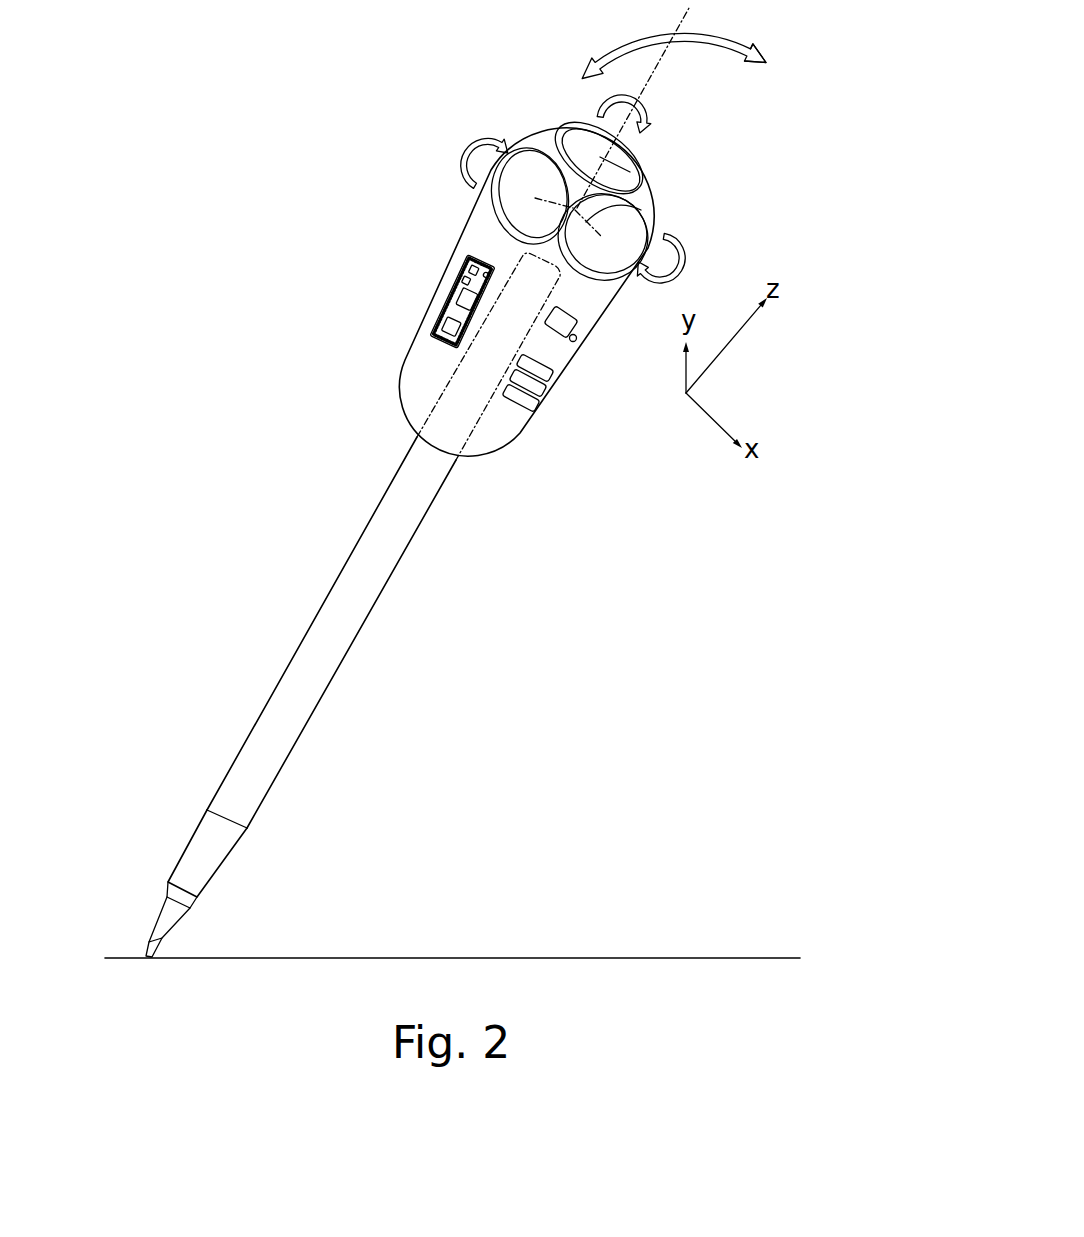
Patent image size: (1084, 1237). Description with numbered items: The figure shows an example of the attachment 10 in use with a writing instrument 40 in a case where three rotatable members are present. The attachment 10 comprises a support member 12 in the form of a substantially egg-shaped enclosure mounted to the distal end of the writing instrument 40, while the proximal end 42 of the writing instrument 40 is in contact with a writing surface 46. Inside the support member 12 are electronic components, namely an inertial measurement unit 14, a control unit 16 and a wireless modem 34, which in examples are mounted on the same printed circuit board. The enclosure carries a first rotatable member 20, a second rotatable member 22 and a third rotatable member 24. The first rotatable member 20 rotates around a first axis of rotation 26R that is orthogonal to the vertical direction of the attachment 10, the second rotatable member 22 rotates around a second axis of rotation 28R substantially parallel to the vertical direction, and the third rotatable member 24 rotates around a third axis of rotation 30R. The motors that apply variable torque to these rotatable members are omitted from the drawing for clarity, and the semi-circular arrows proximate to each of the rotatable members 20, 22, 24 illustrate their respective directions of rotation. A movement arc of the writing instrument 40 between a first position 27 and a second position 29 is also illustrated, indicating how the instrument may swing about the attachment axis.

The attachment 10 is at (405, 143).
The support member 12 is at (462, 250).
The inertial measurement unit 14 is at (578, 341).
The control unit 16 is at (435, 346).
The first rotatable member 20 is at (635, 233).
The second rotatable member 22 is at (640, 153).
The third rotatable member 24 is at (517, 199).
The first axis of rotation 26R is at (647, 209).
The first position 27 is at (658, 61).
The second axis of rotation 28R is at (562, 172).
The second position 29 is at (776, 65).
The third axis of rotation 30R is at (542, 192).
The wireless modem 34 is at (543, 410).
The writing instrument 40 is at (233, 686).
The proximal end 42 is at (181, 927).
The writing surface 46 is at (800, 958).